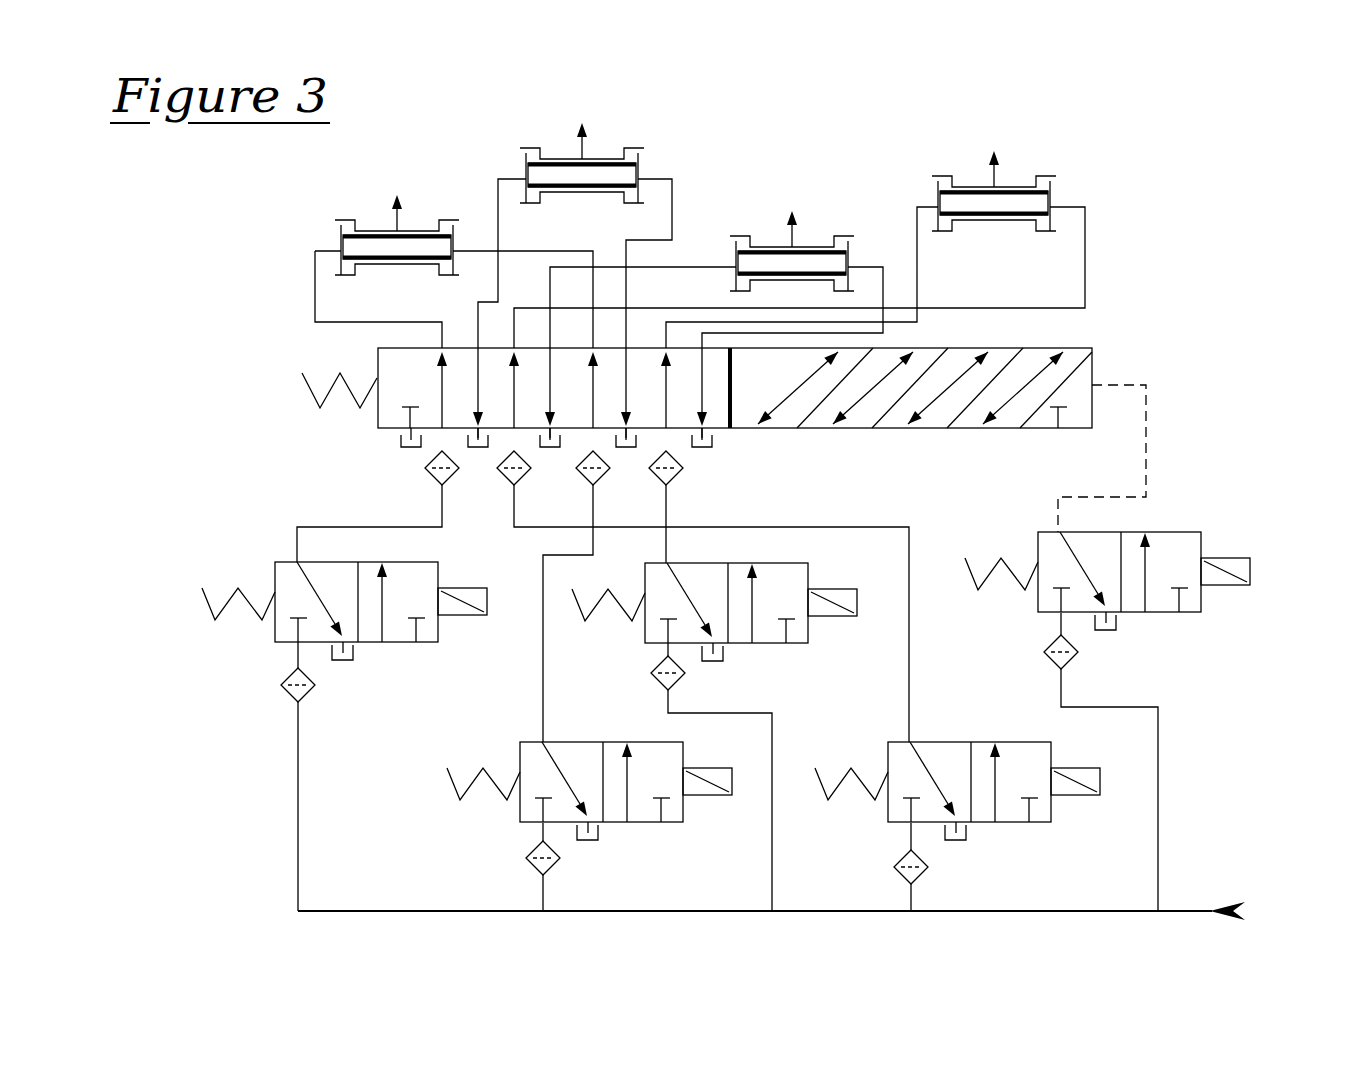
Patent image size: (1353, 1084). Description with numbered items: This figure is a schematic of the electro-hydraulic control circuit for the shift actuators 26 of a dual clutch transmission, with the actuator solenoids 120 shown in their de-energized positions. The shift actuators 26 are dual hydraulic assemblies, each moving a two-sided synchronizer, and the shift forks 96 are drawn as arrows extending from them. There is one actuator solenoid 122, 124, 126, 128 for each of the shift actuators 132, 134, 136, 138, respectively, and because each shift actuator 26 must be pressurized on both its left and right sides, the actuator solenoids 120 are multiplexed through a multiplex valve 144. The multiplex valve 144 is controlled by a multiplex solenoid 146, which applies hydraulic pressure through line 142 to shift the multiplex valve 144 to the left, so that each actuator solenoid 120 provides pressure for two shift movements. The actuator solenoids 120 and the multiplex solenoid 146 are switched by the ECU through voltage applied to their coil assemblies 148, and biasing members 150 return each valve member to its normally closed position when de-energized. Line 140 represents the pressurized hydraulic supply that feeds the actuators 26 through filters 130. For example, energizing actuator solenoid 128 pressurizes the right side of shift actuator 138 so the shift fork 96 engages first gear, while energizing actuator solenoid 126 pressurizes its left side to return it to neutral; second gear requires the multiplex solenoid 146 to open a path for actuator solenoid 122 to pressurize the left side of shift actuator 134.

The shift actuators 26 is at (773, 140).
The shift forks 96 is at (575, 145).
The actuator solenoids 120 is at (258, 753).
The actuator solenoid 122 is at (387, 643).
The actuator solenoid 124 is at (627, 825).
The actuator solenoid 126 is at (760, 645).
The actuator solenoid 128 is at (935, 742).
The filters 130 is at (683, 480).
The shift actuator 132 is at (365, 220).
The shift actuator 134 is at (613, 152).
The shift actuator 136 is at (738, 232).
The shift actuator 138 is at (1023, 177).
The line 140 is at (1175, 908).
The line 142 is at (1112, 384).
The multiplex valve 144 is at (772, 428).
The multiplex solenoid 146 is at (1158, 532).
The coil assemblies 148 is at (445, 617).
The biasing members 150 is at (237, 590).